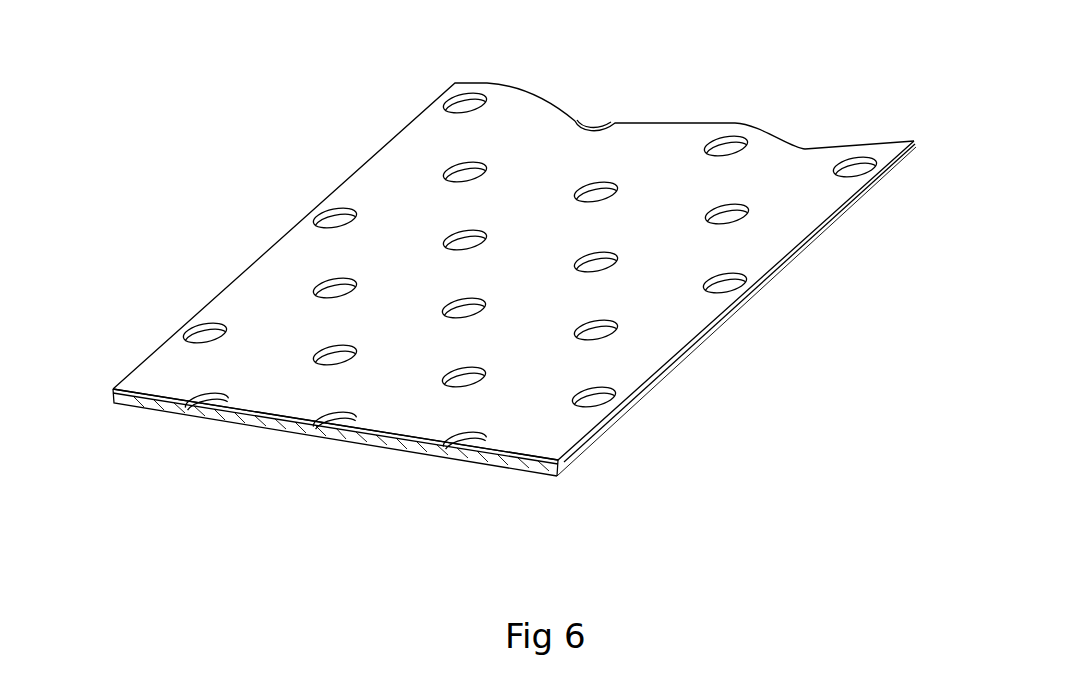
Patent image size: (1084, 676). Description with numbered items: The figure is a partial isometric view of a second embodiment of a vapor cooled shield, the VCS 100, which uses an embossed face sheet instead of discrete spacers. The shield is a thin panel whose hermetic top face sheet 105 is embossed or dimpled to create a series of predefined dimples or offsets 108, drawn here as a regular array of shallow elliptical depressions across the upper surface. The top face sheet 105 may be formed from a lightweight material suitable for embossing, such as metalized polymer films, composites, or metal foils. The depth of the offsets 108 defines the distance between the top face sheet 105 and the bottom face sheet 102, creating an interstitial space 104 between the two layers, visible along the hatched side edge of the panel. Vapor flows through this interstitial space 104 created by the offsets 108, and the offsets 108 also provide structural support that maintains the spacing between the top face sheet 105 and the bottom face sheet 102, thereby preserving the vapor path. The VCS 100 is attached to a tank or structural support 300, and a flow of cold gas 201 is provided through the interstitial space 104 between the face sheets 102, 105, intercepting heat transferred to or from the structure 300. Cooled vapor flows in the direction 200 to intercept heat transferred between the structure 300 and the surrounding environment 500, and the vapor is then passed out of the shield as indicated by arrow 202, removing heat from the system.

The vapor cooled shield (VCS) 100 is at (500, 308).
The bottom face sheet 102 is at (147, 400).
The interstitial space 104 is at (517, 457).
The top face sheet 105 is at (252, 306).
The offsets 108 is at (330, 218).
The direction of vapor flow 200 is at (655, 437).
The flow of cold gas 201 is at (323, 453).
The arrow indicating vapor exit 202 is at (640, 117).
The tank or structural support 300 is at (223, 410).
The surrounding environment 500 is at (855, 96).